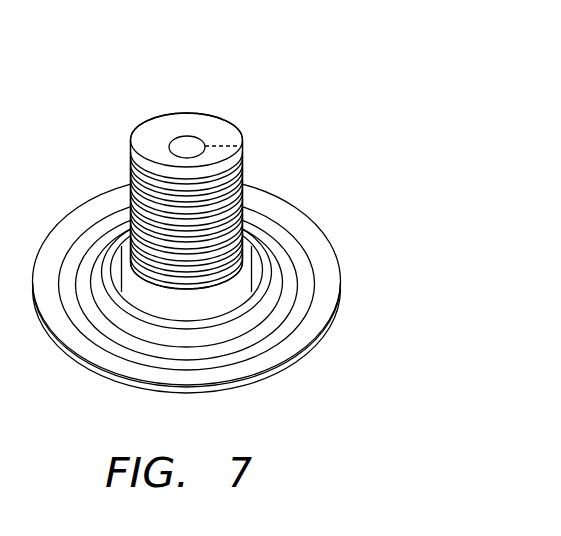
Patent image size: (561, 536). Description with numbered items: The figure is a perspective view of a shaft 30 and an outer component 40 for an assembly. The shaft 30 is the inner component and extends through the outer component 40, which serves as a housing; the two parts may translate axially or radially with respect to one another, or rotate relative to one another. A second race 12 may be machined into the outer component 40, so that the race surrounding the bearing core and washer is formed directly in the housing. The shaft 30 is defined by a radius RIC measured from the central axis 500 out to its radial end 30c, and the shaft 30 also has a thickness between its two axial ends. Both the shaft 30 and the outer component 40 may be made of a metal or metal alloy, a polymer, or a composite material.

The second race 12 is at (313, 272).
The outer component 40 is at (318, 340).
The shaft 30 is at (243, 150).
The radial end 30c is at (240, 130).
The central axis 500 is at (184, 140).
The radius RIC is at (223, 143).